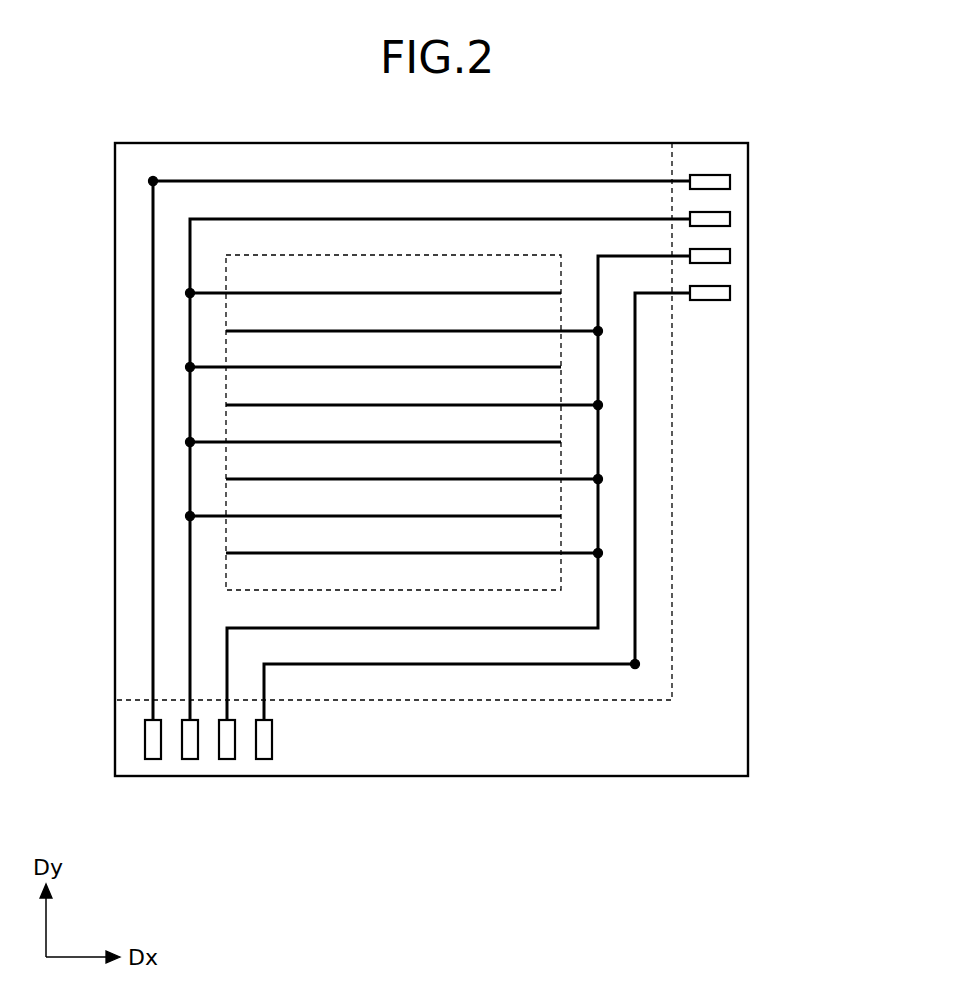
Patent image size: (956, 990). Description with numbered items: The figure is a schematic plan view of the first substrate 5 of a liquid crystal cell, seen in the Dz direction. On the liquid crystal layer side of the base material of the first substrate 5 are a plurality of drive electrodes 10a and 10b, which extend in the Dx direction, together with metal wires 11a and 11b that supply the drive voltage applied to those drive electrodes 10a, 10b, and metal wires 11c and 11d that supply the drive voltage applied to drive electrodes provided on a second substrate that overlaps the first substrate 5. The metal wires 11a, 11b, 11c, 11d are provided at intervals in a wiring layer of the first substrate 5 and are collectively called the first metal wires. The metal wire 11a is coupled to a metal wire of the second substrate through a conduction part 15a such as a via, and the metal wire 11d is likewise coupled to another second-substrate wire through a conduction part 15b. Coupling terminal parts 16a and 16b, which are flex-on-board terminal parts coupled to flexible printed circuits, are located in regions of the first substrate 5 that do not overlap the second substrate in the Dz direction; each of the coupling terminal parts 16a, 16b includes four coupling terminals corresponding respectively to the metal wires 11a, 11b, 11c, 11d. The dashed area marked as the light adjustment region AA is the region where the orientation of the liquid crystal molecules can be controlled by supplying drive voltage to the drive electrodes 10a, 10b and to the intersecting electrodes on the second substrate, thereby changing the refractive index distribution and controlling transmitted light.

The first substrate 5 is at (212, 143).
The drive electrode 10a is at (388, 292).
The drive electrode 10b is at (470, 330).
The metal wire 11a is at (152, 403).
The metal wire 11b is at (189, 472).
The metal wire 11c is at (598, 520).
The metal wire 11d is at (635, 577).
The conduction part 15a is at (153, 178).
The conduction part 15b is at (640, 662).
The coupling terminal part 16a is at (271, 786).
The coupling terminal part 16b is at (760, 174).
The light adjustment region AA is at (561, 425).